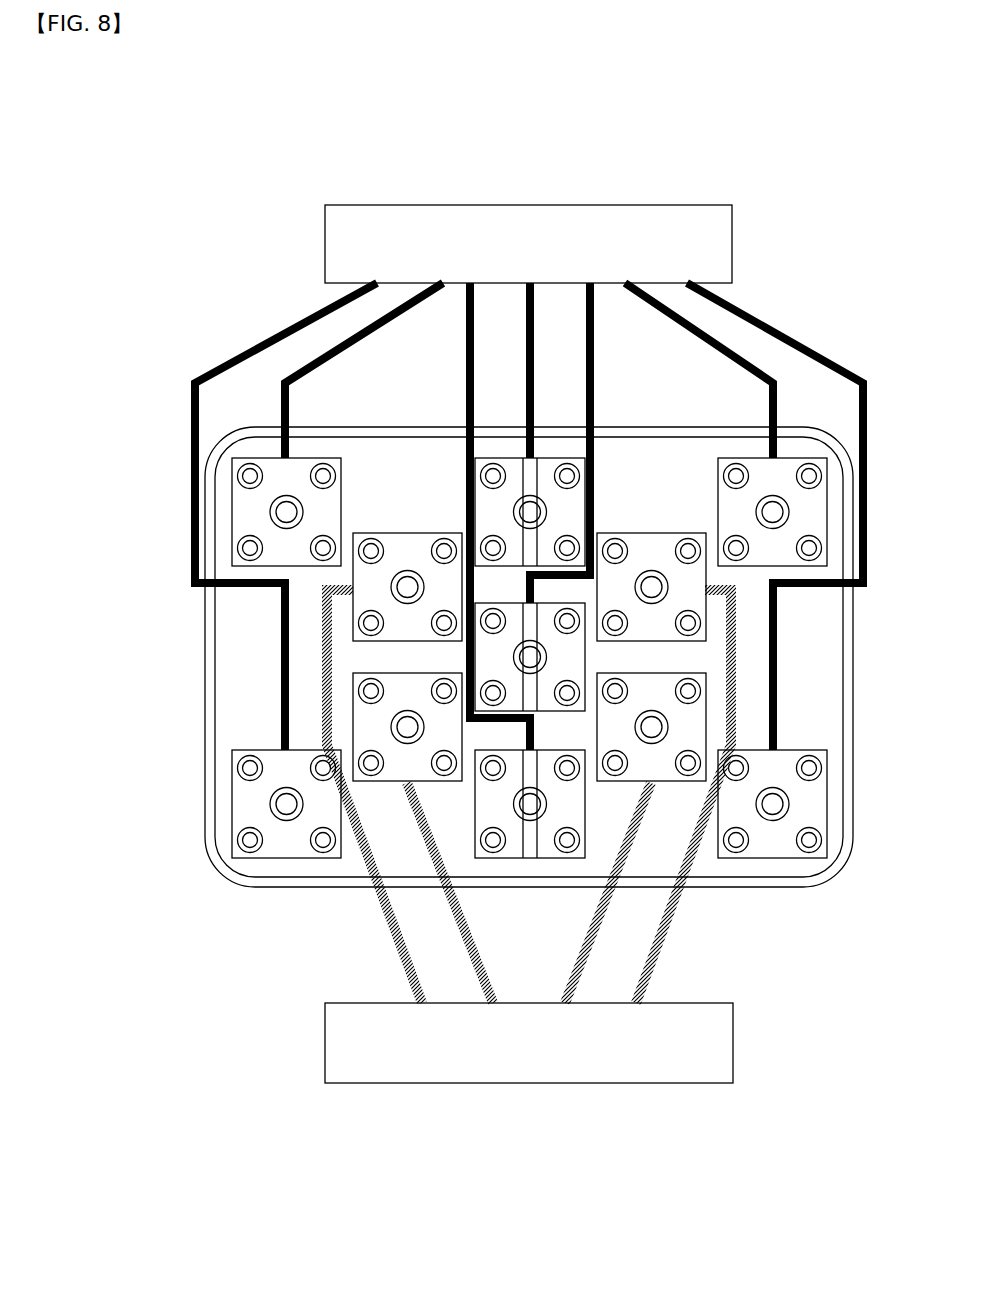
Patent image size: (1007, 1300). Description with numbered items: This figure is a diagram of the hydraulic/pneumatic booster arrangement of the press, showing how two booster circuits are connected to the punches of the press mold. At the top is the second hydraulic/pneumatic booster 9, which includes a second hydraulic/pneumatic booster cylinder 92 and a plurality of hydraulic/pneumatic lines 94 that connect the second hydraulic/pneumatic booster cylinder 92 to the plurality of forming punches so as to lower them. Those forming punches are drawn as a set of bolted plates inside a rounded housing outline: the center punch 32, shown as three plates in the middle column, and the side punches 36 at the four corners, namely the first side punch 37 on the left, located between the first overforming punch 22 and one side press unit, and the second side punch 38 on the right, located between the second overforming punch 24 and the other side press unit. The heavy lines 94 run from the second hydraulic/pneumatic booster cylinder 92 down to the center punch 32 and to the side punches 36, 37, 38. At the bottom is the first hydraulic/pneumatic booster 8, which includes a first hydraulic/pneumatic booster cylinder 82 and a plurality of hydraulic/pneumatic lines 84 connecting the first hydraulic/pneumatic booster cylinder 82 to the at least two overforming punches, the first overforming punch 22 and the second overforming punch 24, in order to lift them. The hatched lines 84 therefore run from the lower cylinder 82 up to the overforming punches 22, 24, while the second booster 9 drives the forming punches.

The first hydraulic/pneumatic booster 8 is at (716, 1102).
The second hydraulic/pneumatic booster 9 is at (716, 183).
The first overforming punch 22 is at (405, 533).
The second overforming punch 24 is at (650, 533).
The center punch 32 is at (553, 458).
The side punch 36 is at (529, 659).
The first side punch 37 is at (310, 458).
The second side punch 38 is at (742, 458).
The first hydraulic/pneumatic booster cylinder 82 is at (527, 1083).
The hydraulic/pneumatic lines 84 is at (393, 945).
The second hydraulic/pneumatic booster cylinder 92 is at (530, 205).
The hydraulic/pneumatic lines 94 is at (282, 332).